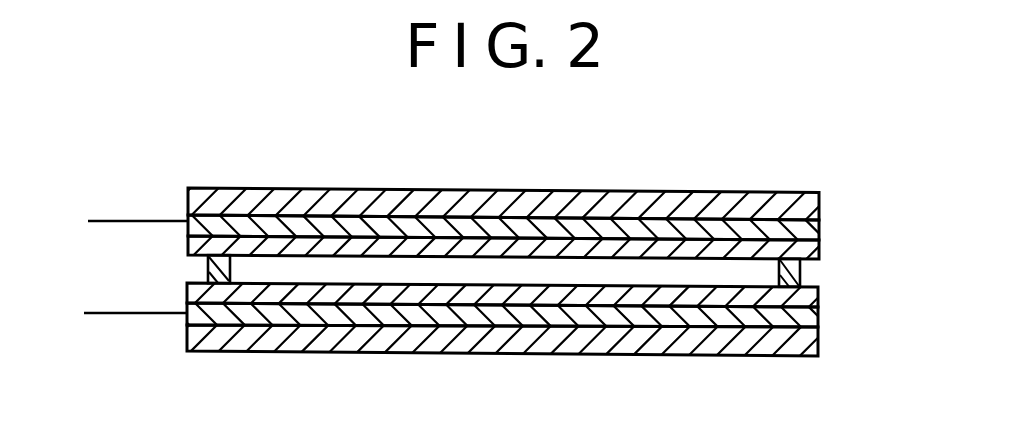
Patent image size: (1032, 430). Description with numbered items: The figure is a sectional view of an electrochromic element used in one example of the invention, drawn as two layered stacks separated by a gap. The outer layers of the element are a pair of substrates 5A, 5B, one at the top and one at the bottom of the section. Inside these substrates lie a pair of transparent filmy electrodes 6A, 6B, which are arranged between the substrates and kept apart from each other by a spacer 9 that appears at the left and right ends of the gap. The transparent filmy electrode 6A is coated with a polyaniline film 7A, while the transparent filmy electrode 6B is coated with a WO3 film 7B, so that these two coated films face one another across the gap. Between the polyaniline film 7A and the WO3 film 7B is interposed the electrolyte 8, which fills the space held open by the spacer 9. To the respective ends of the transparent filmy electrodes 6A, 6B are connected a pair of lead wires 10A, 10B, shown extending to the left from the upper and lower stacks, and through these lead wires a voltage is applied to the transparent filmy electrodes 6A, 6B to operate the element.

The substrate 5A is at (772, 205).
The substrate 5B is at (780, 343).
The transparent filmy electrode 6A is at (820, 229).
The transparent filmy electrode 6B is at (820, 325).
The polyaniline film 7A is at (819, 253).
The WO3 film 7B is at (818, 304).
The electrolyte 8 is at (448, 268).
The spacer 9 is at (208, 268).
The lead wire 10A is at (133, 220).
The lead wire 10B is at (121, 315).